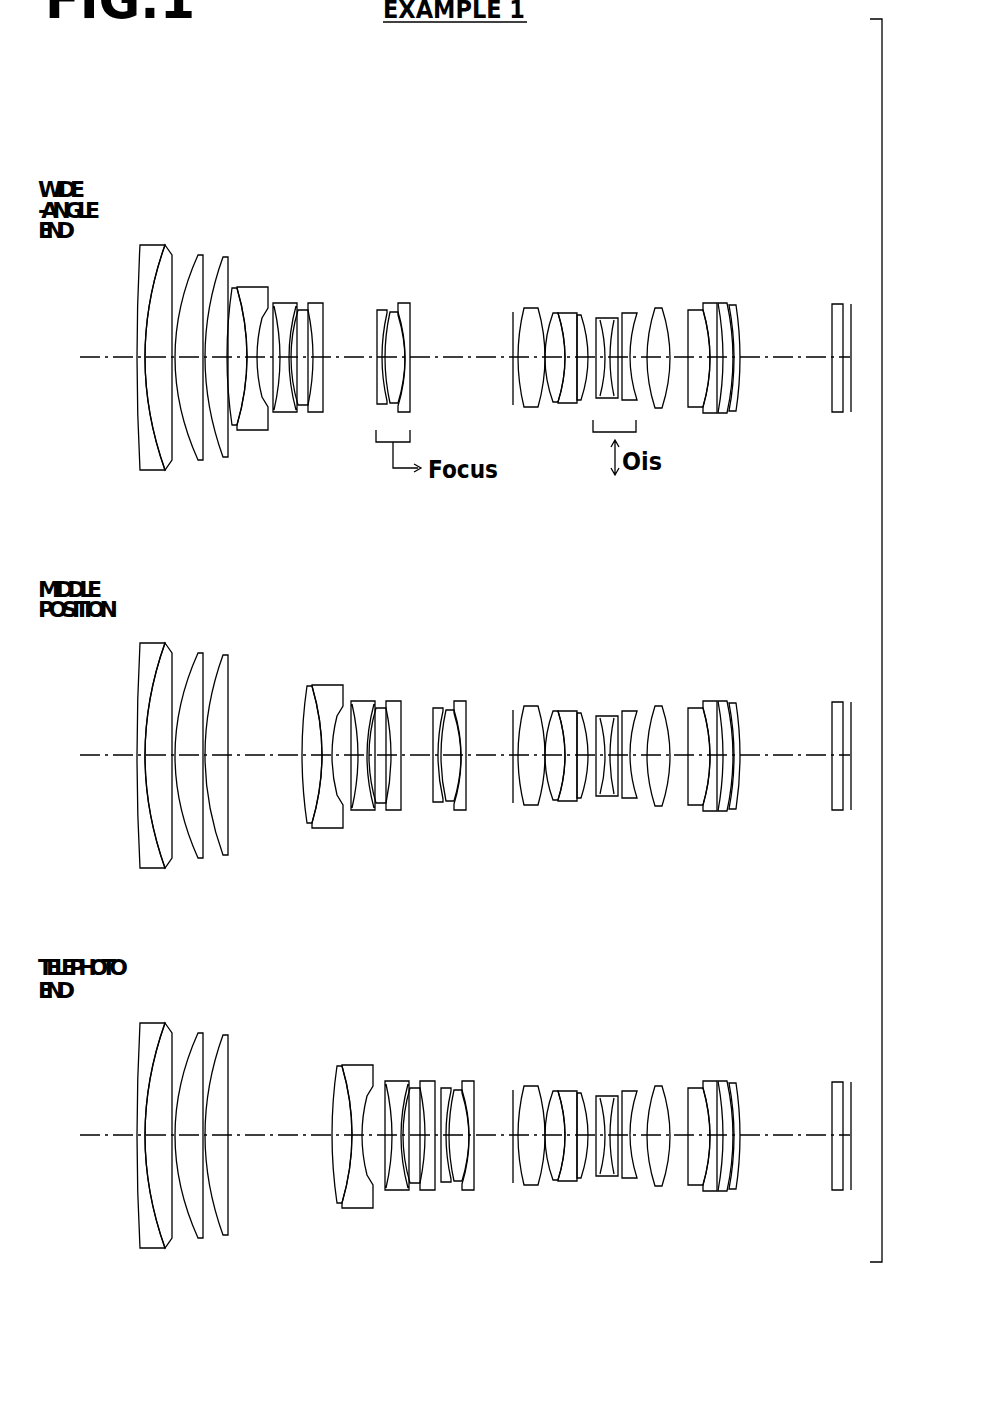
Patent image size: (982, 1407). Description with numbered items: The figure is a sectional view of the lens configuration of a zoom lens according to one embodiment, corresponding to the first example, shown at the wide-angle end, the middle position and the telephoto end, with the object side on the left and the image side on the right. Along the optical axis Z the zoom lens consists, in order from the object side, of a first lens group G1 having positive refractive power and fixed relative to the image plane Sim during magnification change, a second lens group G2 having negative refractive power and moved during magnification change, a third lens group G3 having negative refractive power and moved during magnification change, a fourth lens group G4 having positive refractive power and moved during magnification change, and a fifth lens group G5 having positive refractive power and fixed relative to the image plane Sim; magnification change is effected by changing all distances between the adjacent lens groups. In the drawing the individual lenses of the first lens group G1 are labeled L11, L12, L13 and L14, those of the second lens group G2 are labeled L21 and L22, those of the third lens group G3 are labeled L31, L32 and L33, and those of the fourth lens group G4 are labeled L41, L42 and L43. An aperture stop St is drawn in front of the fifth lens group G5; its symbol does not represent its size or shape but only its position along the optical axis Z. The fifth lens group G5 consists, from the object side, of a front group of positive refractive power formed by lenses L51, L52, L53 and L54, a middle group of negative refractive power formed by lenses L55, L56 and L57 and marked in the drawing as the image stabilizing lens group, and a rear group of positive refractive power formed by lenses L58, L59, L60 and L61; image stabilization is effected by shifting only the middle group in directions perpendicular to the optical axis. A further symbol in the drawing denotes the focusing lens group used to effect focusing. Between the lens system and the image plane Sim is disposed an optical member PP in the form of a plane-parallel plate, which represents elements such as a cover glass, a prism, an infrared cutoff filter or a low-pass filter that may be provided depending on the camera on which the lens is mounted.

The first lens group G1 is at (225, 108).
The second lens group G2 is at (300, 186).
The third lens group G3 is at (395, 186).
The fourth lens group G4 is at (515, 125).
The fifth lens group G5 is at (845, 113).
The lens L11 is at (150, 246).
The lens L12 is at (166, 246).
The lens L13 is at (198, 254).
The lens L14 is at (224, 256).
The lens L21 is at (236, 289).
The lens L22 is at (255, 287).
The lens L31 is at (281, 304).
The lens L32 is at (302, 309).
The lens L33 is at (318, 303).
The lens L41 is at (382, 309).
The lens L42 is at (394, 311).
The lens L43 is at (405, 303).
The lens L51 is at (531, 308).
The lens L52 is at (553, 312).
The lens L53 is at (566, 313).
The lens L54 is at (580, 315).
The lens L55 is at (606, 318).
The lens L56 is at (629, 313).
The lens L57 is at (659, 308).
The lens L58 is at (695, 310).
The lens L59 is at (710, 303).
The lens L60 is at (724, 303).
The lens L61 is at (733, 305).
The aperture stop St is at (513, 312).
The optical member PP is at (833, 414).
The image plane Sim is at (852, 414).
The optical axis Z is at (96, 356).